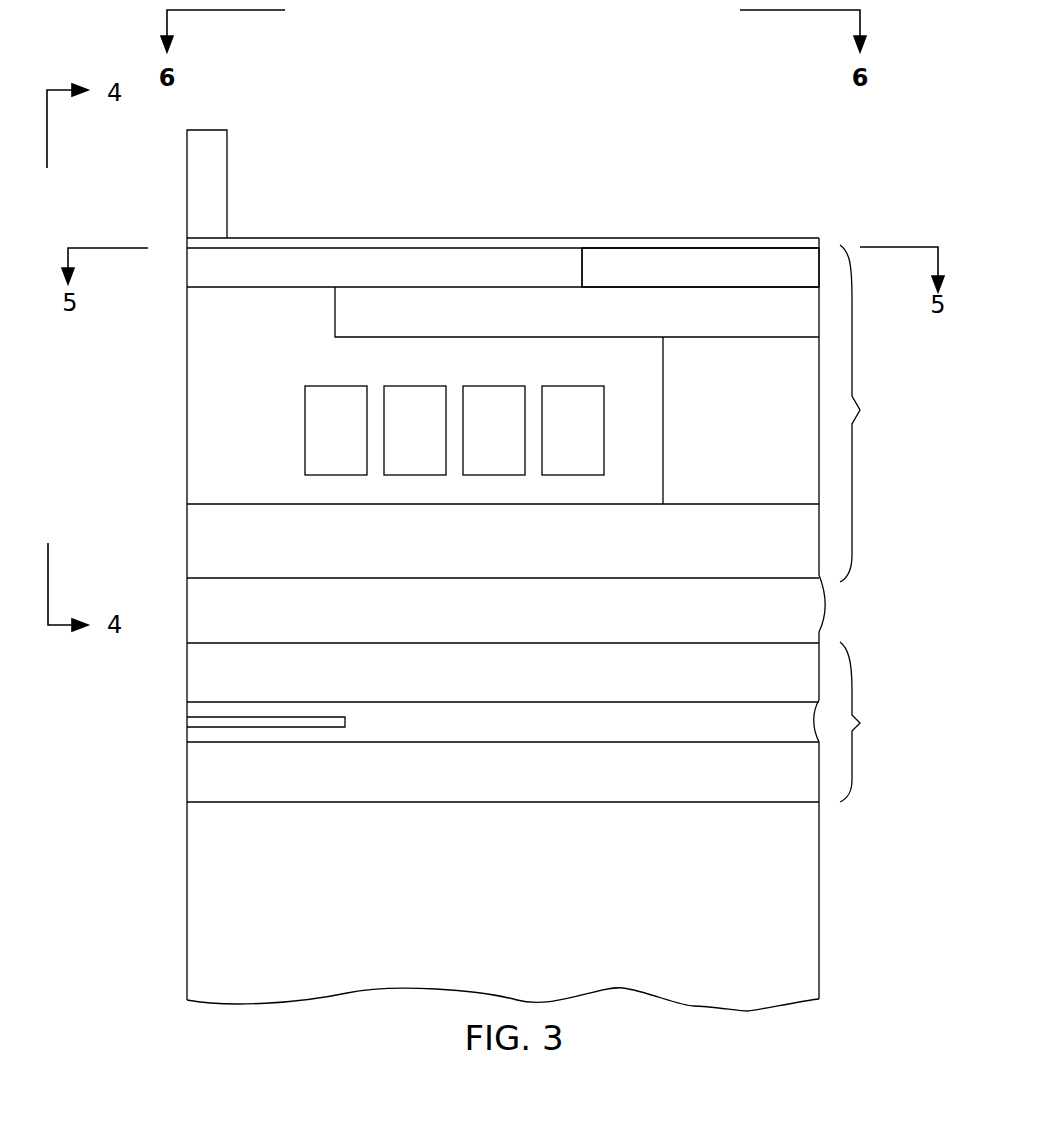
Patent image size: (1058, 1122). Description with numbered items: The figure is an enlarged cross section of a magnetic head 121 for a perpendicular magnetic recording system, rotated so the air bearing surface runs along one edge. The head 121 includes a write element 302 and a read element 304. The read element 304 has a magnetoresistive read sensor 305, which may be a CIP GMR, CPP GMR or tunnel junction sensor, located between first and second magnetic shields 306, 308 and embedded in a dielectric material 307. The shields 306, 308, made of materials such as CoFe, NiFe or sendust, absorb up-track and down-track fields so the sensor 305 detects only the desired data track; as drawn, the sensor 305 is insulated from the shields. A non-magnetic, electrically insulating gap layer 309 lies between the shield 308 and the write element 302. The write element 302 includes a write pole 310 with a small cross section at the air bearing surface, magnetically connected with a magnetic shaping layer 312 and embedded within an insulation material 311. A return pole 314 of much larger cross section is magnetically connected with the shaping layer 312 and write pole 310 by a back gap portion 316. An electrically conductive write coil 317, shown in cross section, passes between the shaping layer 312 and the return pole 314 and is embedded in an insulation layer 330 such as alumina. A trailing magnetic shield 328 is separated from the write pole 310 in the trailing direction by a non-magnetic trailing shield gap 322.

The magnetic head 121 is at (527, 136).
The write element 302 is at (855, 489).
The read element 304 is at (852, 657).
The magnetoresistive read sensor 305 is at (345, 722).
The first magnetic shield 306 is at (432, 768).
The dielectric material 307 is at (690, 720).
The second magnetic shield 308 is at (433, 673).
The gap layer 309 is at (455, 603).
The write pole 310 is at (288, 269).
The insulation material 311 is at (706, 269).
The magnetic shaping layer 312 is at (463, 315).
The return pole 314 is at (442, 537).
The back gap portion 316 is at (172, 345).
The write coil 317 is at (594, 427).
The trailing shield gap 322 is at (390, 238).
The trailing magnetic shield 328 is at (213, 148).
The insulation layer 330 is at (520, 364).